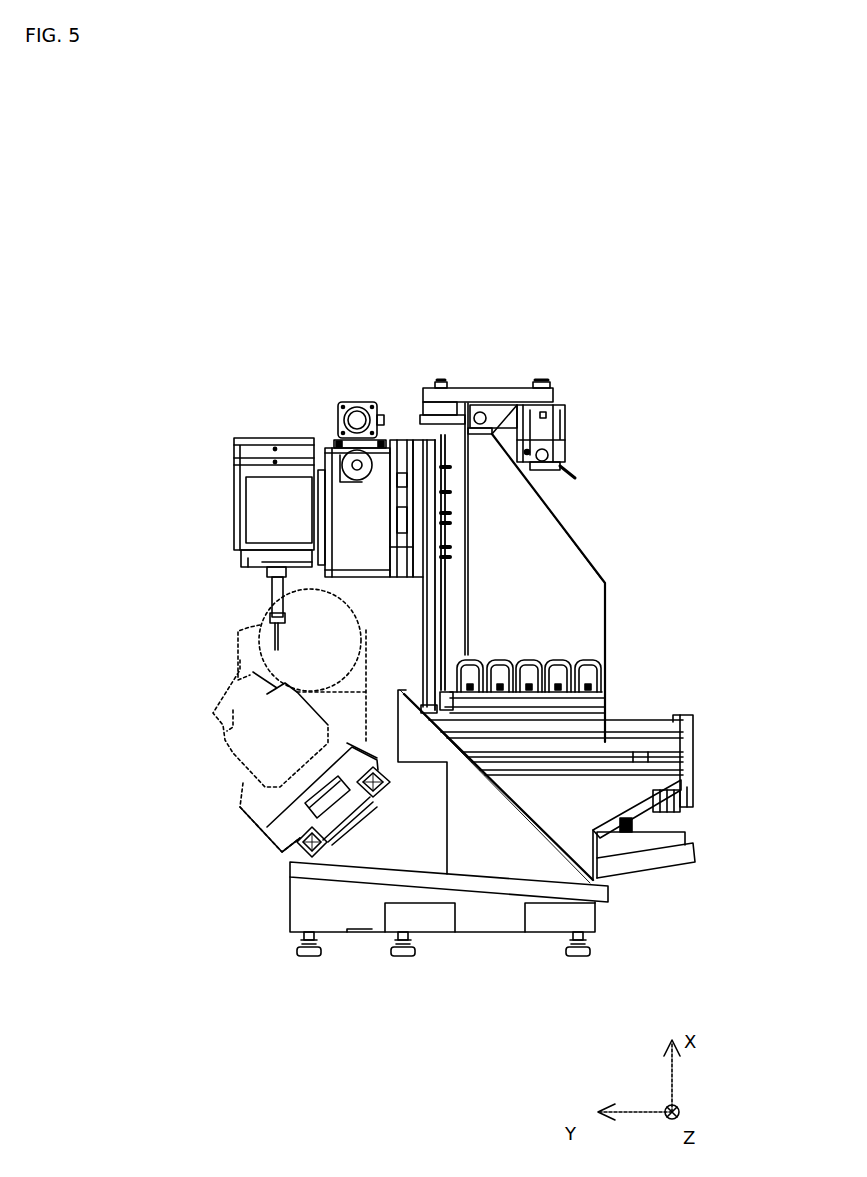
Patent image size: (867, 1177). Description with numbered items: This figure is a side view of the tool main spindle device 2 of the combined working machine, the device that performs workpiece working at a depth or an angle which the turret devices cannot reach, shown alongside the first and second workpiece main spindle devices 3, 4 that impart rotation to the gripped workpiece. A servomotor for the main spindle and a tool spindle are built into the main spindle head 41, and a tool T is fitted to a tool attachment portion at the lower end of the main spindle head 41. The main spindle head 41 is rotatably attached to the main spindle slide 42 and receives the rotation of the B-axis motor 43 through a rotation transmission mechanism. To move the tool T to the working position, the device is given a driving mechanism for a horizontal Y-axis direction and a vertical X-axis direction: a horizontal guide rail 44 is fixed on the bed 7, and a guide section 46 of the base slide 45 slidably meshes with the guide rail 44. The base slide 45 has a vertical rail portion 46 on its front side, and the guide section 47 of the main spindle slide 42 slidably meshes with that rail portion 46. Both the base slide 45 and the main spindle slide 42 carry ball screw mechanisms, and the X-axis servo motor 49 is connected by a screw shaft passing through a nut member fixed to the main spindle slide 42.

The tool main spindle device 2 is at (507, 290).
The first workpiece main spindle device 3 is at (280, 761).
The second workpiece main spindle device 4 is at (200, 772).
The bed 7 is at (485, 912).
The main spindle head 41 is at (270, 492).
The main spindle slide 42 is at (375, 543).
The B-axis motor 43 is at (362, 418).
The horizontal guide rail 44 is at (633, 742).
The base slide 45 is at (567, 575).
The guide section / vertical rail portion 46 is at (427, 633).
The guide section 47 is at (423, 462).
The X-axis servo motor 49 is at (540, 427).
The tool T is at (270, 583).